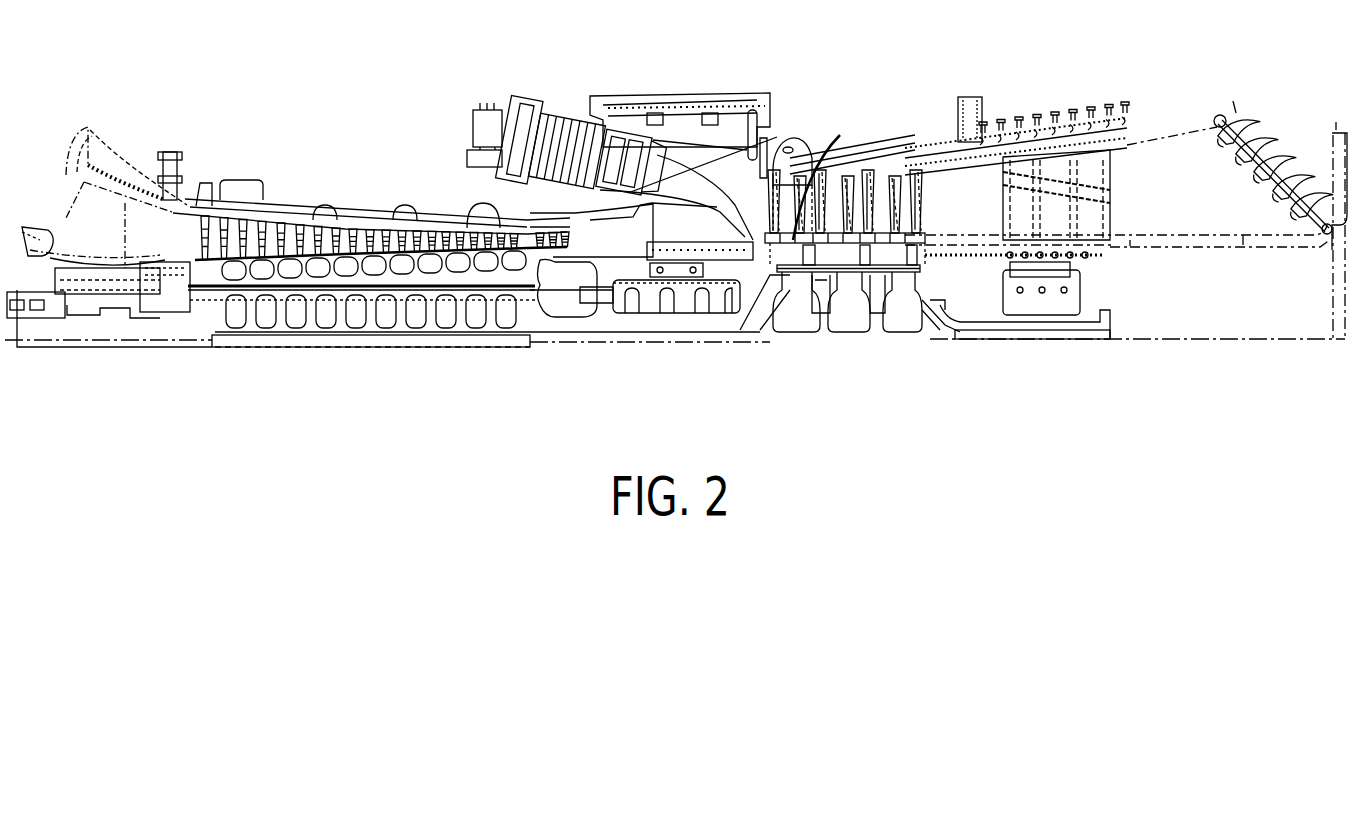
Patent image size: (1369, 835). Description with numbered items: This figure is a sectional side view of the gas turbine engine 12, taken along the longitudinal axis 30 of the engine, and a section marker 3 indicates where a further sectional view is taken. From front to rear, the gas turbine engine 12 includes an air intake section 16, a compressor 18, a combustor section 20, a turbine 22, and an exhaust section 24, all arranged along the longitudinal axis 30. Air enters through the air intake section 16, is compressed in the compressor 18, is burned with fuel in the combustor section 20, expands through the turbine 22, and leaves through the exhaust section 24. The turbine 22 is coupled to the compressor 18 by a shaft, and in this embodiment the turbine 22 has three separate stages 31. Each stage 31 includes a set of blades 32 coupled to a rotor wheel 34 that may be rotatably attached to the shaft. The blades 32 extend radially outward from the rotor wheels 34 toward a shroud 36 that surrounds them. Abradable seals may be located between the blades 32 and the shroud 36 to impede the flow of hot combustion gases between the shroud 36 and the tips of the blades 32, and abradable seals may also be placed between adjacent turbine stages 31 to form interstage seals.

The gas turbine engine 12 is at (583, 373).
The air intake section 16 is at (82, 232).
The compressor 18 is at (488, 198).
The combustor section 20 is at (720, 108).
The turbine 22 is at (888, 84).
The exhaust section 24 is at (1333, 83).
The longitudinal axis 30 is at (1262, 342).
The stage 31 is at (849, 385).
The blade 32 is at (823, 170).
The rotor wheel 34 is at (910, 327).
The shroud 36 is at (840, 135).
The section line 3- 3 is at (870, 152).